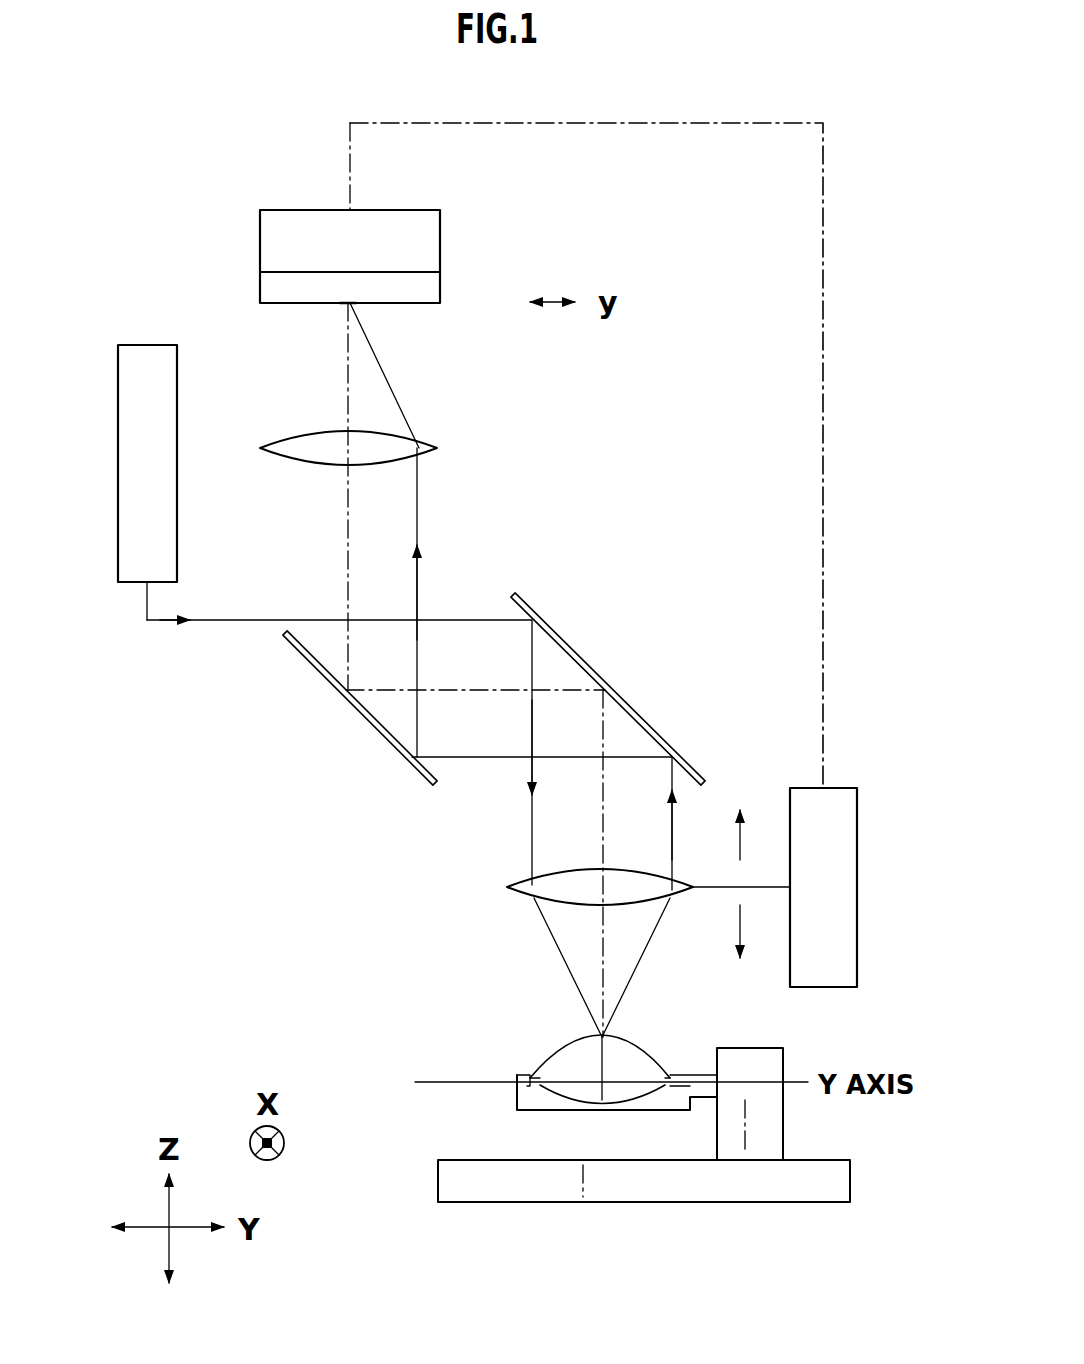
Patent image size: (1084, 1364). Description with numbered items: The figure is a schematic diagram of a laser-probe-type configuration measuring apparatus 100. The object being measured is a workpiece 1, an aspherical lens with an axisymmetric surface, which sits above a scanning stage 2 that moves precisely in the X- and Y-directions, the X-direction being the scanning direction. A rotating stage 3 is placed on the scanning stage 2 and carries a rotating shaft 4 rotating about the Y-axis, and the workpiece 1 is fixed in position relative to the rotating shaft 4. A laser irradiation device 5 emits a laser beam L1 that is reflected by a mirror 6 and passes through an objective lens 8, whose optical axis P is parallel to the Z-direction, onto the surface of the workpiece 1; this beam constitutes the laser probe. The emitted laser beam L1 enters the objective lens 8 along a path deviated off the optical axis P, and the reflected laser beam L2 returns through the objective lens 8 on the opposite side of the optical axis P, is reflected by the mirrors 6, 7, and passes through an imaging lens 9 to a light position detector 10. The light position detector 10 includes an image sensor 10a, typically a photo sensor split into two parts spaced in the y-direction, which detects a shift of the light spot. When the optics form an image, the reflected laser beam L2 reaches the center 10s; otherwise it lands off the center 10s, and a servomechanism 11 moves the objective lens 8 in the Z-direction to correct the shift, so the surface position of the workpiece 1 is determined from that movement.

The workpiece 1 is at (585, 1073).
The scanning stage 2 is at (762, 1202).
The rotating stage 3 is at (783, 1133).
The rotating shaft 4 is at (517, 1097).
The laser irradiation device 5 is at (118, 420).
The mirror 6 is at (582, 655).
The mirror 7 is at (372, 733).
The objective lens 8 is at (512, 893).
The imaging lens 9 is at (285, 460).
The light position detector 10 is at (440, 243).
The image sensor 10a is at (428, 305).
The center 10s is at (347, 305).
The servomechanism 11 is at (857, 870).
The laser-probe-type configuration measuring apparatus 100 is at (850, 612).
The optical axis P is at (603, 841).
The laser beam L1 is at (246, 622).
The reflected laser beam L2 is at (420, 492).